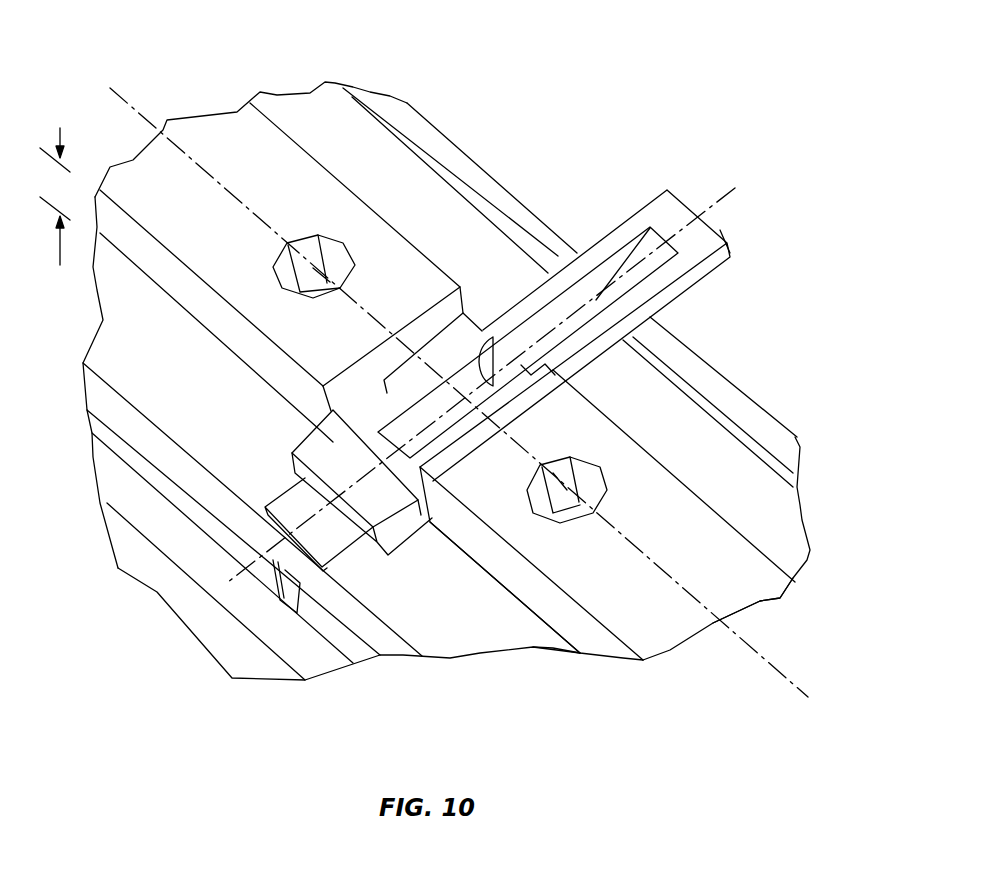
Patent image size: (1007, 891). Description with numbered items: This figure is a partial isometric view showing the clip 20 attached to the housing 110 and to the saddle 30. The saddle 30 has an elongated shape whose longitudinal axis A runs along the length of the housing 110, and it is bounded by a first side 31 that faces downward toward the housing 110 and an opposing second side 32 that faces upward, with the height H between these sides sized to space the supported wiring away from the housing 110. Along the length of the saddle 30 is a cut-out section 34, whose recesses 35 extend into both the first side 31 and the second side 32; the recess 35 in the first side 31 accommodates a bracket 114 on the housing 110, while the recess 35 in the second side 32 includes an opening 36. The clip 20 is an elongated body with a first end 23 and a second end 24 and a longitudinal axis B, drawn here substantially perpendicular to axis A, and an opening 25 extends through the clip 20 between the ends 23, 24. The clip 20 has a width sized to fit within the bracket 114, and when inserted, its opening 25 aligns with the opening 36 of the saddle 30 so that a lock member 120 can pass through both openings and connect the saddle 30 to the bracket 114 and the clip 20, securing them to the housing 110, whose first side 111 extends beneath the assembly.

The clip 20 is at (707, 215).
The first end 23 is at (267, 520).
The second end 24 is at (730, 237).
The opening 25 is at (570, 367).
The saddle 30 is at (727, 590).
The first side 31 is at (557, 630).
The second side 32 is at (703, 567).
The cut-out section 34 is at (436, 327).
The recess 35 is at (370, 407).
The opening 36 is at (488, 385).
The housing 110 is at (737, 470).
The first side 111 is at (450, 632).
The bracket 114 is at (603, 345).
The lock member 120 is at (531, 325).